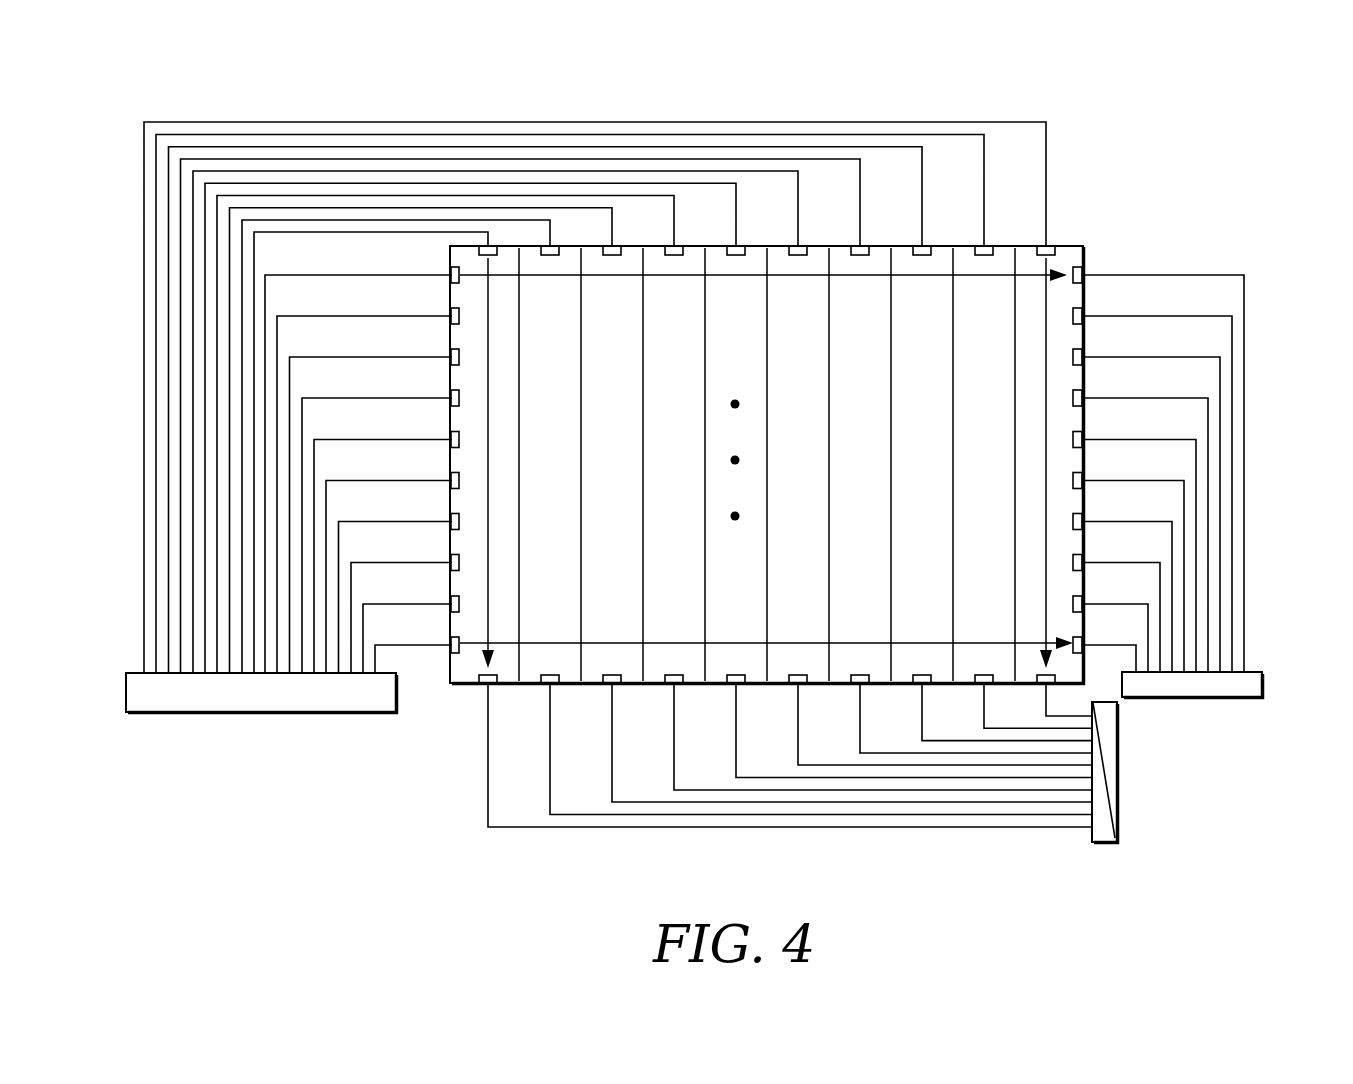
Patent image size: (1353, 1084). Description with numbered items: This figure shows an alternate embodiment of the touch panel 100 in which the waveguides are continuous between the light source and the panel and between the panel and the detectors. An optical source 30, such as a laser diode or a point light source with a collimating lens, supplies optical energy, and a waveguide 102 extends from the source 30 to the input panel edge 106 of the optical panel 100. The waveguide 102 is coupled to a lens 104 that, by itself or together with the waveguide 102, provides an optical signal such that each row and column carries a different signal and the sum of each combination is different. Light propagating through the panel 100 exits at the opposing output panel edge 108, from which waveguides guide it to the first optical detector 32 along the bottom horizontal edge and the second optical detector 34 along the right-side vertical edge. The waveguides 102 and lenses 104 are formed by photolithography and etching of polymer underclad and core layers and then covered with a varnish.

The touch panel 100 is at (1256, 122).
The waveguide 102 is at (1046, 158).
The lens 104 is at (1048, 245).
The input panel edge 106 is at (450, 337).
The output panel edge 108 is at (633, 686).
The optical source 30 is at (265, 714).
The first optical detector 32 is at (1102, 844).
The second optical detector 34 is at (1263, 680).